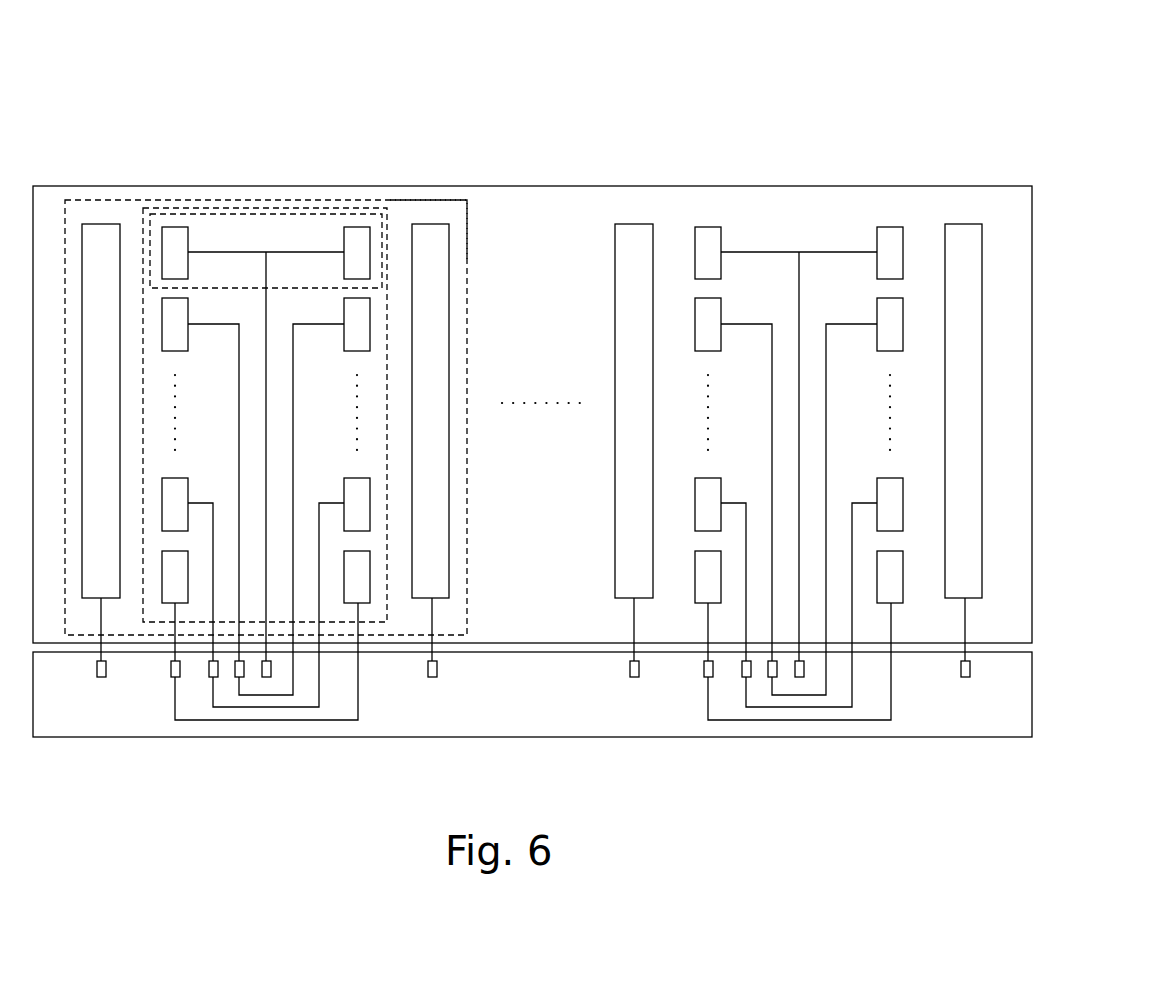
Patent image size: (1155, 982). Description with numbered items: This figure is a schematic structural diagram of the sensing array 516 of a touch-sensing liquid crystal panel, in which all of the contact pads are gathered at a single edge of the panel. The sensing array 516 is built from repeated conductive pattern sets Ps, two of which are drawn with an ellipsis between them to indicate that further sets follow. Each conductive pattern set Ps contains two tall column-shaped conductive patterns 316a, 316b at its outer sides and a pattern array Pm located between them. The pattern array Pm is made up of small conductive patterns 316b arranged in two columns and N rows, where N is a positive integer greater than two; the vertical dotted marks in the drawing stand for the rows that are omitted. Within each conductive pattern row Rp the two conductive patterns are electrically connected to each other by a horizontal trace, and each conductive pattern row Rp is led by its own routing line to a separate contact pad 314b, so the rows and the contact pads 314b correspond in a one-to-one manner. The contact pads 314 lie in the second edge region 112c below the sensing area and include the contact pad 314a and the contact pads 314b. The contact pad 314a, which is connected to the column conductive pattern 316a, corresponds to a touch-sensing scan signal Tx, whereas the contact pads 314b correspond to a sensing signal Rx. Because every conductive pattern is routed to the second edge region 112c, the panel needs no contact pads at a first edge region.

The sensing array 516 is at (437, 98).
The conductive pattern 316a is at (101, 224).
The conductive pattern 316b is at (363, 224).
The conductive pattern row Rp is at (265, 415).
The pattern array Pm is at (178, 213).
The conductive pattern set Ps is at (436, 200).
The second edge region 112c is at (1018, 696).
The contact pads 314 is at (254, 759).
The contact pad 314a is at (101, 677).
The contact pad 314b is at (265, 727).